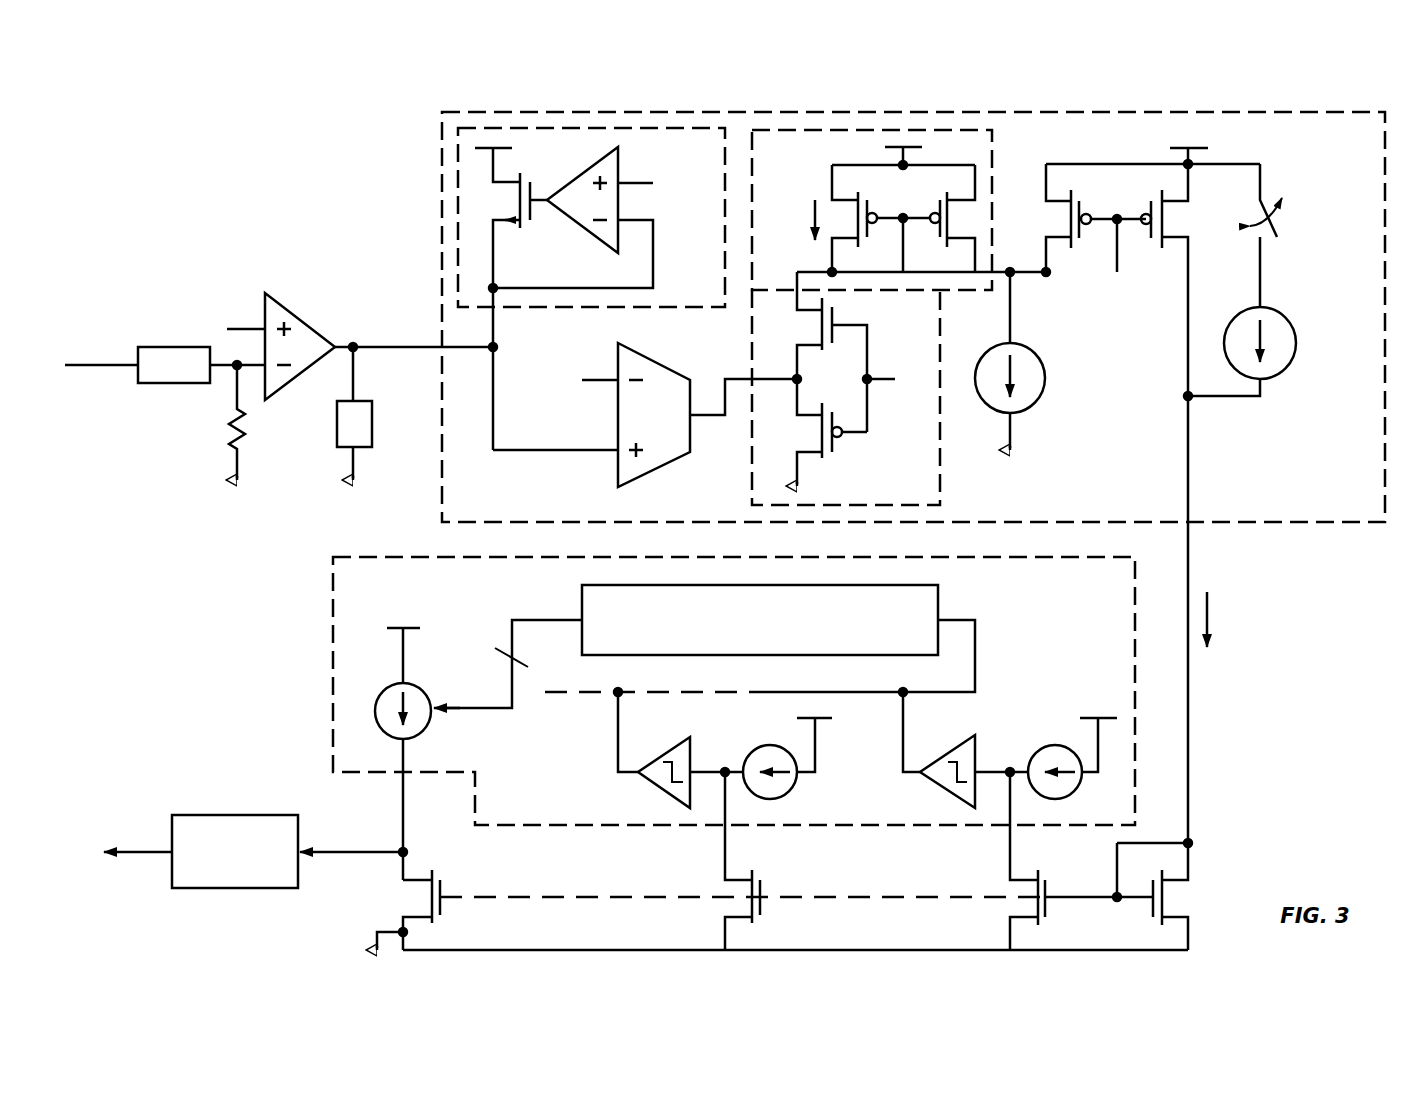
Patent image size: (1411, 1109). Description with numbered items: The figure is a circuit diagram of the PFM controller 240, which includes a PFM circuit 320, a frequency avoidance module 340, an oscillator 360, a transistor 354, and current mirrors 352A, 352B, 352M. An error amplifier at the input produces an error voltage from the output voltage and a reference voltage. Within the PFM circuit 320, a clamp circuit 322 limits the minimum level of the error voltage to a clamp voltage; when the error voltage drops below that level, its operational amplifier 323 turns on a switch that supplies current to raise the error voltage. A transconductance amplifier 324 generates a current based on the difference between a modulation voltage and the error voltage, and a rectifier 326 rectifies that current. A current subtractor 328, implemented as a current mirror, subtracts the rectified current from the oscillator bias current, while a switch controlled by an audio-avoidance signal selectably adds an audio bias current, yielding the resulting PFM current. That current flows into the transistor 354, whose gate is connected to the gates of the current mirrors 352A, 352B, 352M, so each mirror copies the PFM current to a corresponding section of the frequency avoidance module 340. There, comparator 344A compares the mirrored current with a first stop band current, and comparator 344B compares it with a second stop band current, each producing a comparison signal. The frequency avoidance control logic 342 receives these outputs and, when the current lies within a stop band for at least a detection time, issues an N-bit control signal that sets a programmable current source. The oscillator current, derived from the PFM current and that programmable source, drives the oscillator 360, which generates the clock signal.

The PFM controller 240 is at (279, 273).
The PFM circuit 320 is at (1081, 110).
The clamp circuit 322 is at (473, 130).
The operational amplifier 323 is at (577, 228).
The transconductance amplifier 324 is at (645, 415).
The rectifier 326 is at (846, 388).
The current subtractor 328 is at (881, 210).
The frequency avoidance module 340 is at (330, 600).
The frequency avoidance control logic 342 is at (704, 646).
The comparator 344A is at (973, 750).
The comparator 344B is at (688, 750).
The current mirror 352A is at (994, 861).
The current mirror 352B is at (709, 861).
The current mirror 352M is at (770, 910).
The transistor 354 is at (1140, 894).
The oscillator 360 is at (255, 851).